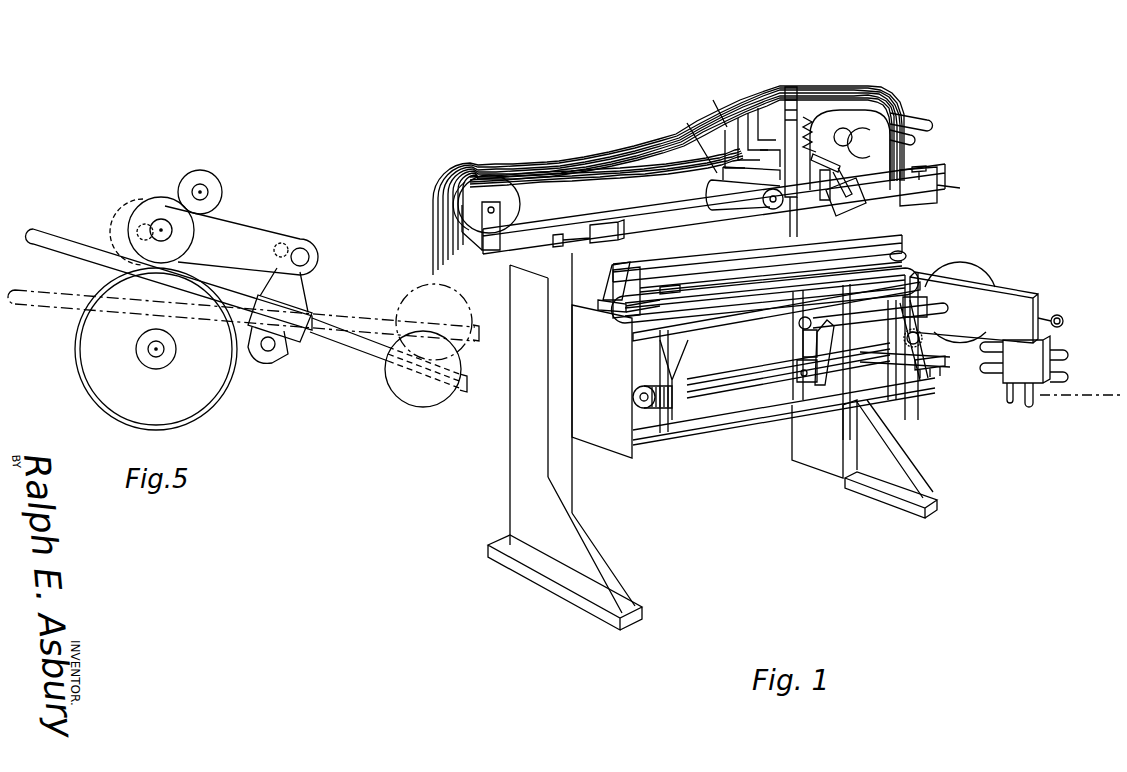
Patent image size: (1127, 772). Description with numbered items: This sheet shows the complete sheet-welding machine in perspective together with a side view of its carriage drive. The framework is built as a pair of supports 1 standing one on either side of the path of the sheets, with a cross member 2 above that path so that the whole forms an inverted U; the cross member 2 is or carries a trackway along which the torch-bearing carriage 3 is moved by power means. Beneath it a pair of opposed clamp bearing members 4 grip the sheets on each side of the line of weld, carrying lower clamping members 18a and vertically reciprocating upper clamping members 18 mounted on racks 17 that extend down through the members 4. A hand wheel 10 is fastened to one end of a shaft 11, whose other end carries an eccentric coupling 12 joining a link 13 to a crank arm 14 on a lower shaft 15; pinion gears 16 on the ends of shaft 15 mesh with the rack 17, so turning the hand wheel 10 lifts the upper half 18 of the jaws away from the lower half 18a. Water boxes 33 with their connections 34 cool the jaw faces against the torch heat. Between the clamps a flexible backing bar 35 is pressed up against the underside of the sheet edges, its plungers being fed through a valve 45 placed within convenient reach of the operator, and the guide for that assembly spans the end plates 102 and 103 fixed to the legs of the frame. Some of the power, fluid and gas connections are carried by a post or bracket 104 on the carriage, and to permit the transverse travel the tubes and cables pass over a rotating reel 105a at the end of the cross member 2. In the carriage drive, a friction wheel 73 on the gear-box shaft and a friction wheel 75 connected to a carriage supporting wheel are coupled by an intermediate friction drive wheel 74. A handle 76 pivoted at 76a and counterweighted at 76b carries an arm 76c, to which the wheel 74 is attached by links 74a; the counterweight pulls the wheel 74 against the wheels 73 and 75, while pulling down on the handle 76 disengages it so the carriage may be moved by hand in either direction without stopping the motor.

In FIG. 1, the supports 1 is at (515, 450).
In FIG. 1, the cross member 2 is at (530, 232).
In FIG. 1, the carriage 3 is at (874, 82).
In FIG. 1, the clamp bearing members 4 is at (753, 362).
In FIG. 1, the hand wheel 10 is at (975, 277).
In FIG. 1, the shaft 11 is at (853, 325).
In FIG. 1, the eccentric coupling 12 is at (798, 322).
In FIG. 1, the link 13 is at (802, 344).
In FIG. 1, the crank arm 14 is at (797, 375).
In FIG. 1, the lower shaft 15 is at (735, 388).
In FIG. 1, the pinion gears 16 is at (655, 408).
In FIG. 1, the rack 17 is at (632, 318).
In FIG. 1, the upper clamping members 18 is at (692, 302).
In FIG. 1, the lower clamping members 18a is at (722, 310).
In FIG. 1, the water boxes 33 is at (604, 288).
In FIG. 1, the connections 34 is at (932, 239).
In FIG. 1, the backing bar 35 is at (620, 312).
In FIG. 1, the valve 45 is at (1063, 318).
In FIG. 1, the end plate 102 is at (602, 381).
In FIG. 1, the end plate 103 is at (926, 380).
In FIG. 1, the post or bracket 104 is at (795, 86).
In FIG. 1, the rotating reel 105a is at (480, 190).
In FIG. 5, the friction wheel 73 is at (220, 181).
In FIG. 5, the intermediate friction drive wheel 74 is at (134, 208).
In FIG. 5, the links 74a is at (240, 230).
In FIG. 5, the friction wheel 75 is at (208, 407).
In FIG. 5, the handle 76 is at (39, 230).
In FIG. 5, the pivot 76a is at (275, 352).
In FIG. 5, the counterweight 76b is at (402, 387).
In FIG. 5, the arm 76c is at (302, 292).